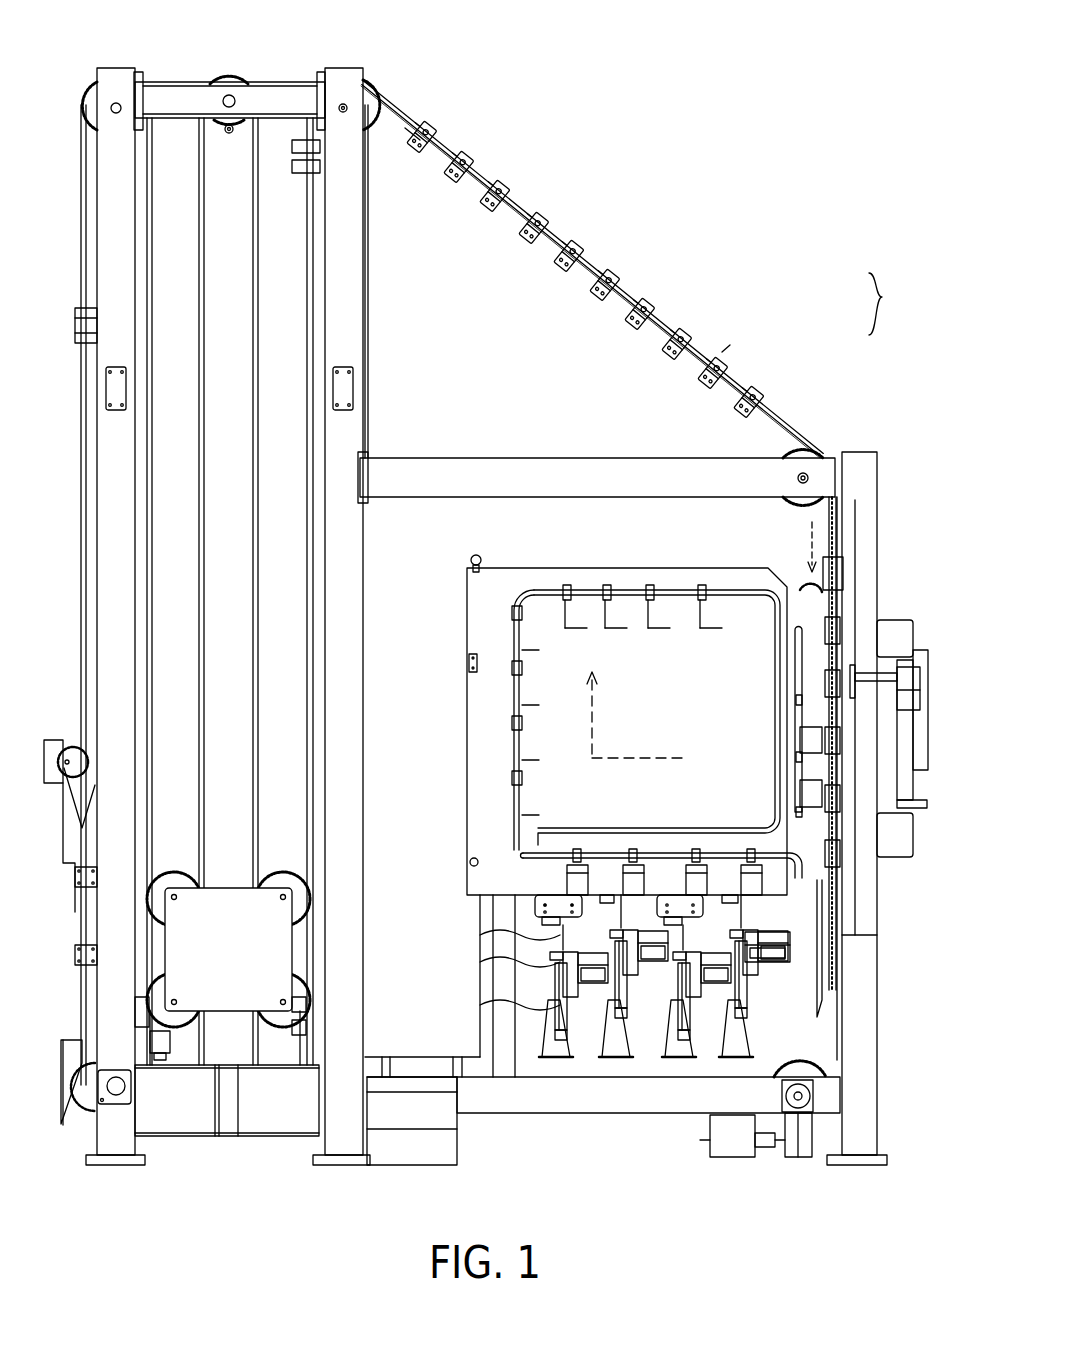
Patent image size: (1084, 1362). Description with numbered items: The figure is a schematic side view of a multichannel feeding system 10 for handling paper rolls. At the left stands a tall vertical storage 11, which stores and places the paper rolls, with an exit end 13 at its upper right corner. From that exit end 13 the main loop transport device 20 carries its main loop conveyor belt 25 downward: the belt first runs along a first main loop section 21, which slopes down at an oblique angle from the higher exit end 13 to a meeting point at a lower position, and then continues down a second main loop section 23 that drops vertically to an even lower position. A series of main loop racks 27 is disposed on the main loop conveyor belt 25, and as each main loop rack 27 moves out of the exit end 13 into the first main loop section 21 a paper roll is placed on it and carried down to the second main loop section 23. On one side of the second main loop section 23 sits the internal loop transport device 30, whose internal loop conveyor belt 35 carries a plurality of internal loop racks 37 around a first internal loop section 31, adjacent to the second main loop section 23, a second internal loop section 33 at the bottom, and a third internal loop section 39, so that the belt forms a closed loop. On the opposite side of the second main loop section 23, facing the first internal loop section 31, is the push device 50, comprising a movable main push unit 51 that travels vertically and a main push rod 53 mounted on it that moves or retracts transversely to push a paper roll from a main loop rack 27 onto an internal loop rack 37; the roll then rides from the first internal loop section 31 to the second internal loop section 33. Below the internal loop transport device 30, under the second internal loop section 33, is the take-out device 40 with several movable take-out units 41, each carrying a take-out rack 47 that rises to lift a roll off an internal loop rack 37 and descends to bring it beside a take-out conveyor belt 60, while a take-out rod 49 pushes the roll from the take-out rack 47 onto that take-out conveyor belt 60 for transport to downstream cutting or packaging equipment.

The multichannel feeding system 10 is at (670, 30).
The vertical storage 11 is at (185, 82).
The exit end 13 is at (370, 82).
The main loop transport device 20 is at (893, 304).
The first main loop section 21 is at (635, 313).
The second main loop section 23 is at (845, 557).
The main loop conveyor belt 25 is at (515, 207).
The main loop rack 27 is at (442, 135).
The internal loop transport device 30 is at (620, 704).
The first internal loop section 31 is at (793, 760).
The second internal loop section 33 is at (650, 852).
The internal loop conveyor belt 35 is at (532, 592).
The internal loop rack 37 is at (655, 628).
The third internal loop section 39 is at (510, 692).
The take-out device 40 is at (638, 1026).
The movable take-out unit 41 is at (560, 1003).
The take-out rack 47 is at (563, 960).
The take-out rod 49 is at (555, 922).
The push device 50 is at (905, 757).
The movable main push unit 51 is at (905, 700).
The main push rod 53 is at (850, 672).
The take-out conveyor belt 60 is at (780, 932).